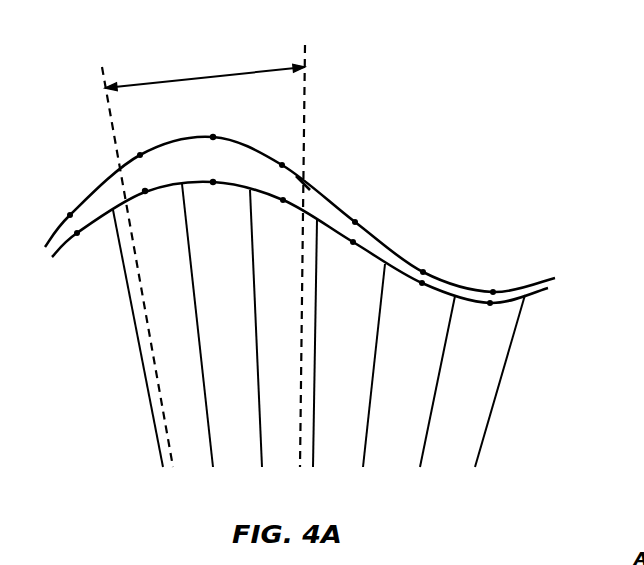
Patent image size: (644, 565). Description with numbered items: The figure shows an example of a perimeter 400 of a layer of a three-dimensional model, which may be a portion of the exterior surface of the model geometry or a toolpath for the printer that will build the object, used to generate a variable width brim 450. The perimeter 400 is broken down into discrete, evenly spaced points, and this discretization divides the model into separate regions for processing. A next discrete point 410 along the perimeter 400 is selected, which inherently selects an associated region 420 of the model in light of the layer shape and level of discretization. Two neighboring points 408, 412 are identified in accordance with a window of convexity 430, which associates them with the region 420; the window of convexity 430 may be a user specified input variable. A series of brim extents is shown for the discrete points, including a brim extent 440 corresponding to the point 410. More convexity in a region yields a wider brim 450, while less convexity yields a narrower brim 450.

The perimeter 400 is at (548, 288).
The brim 450 is at (547, 280).
The neighboring point 408 is at (145, 190).
The discrete point 410 is at (213, 182).
The neighboring point 412 is at (300, 187).
The brim extent 440 is at (213, 137).
The region 420 is at (225, 275).
The window of convexity 430 is at (197, 78).